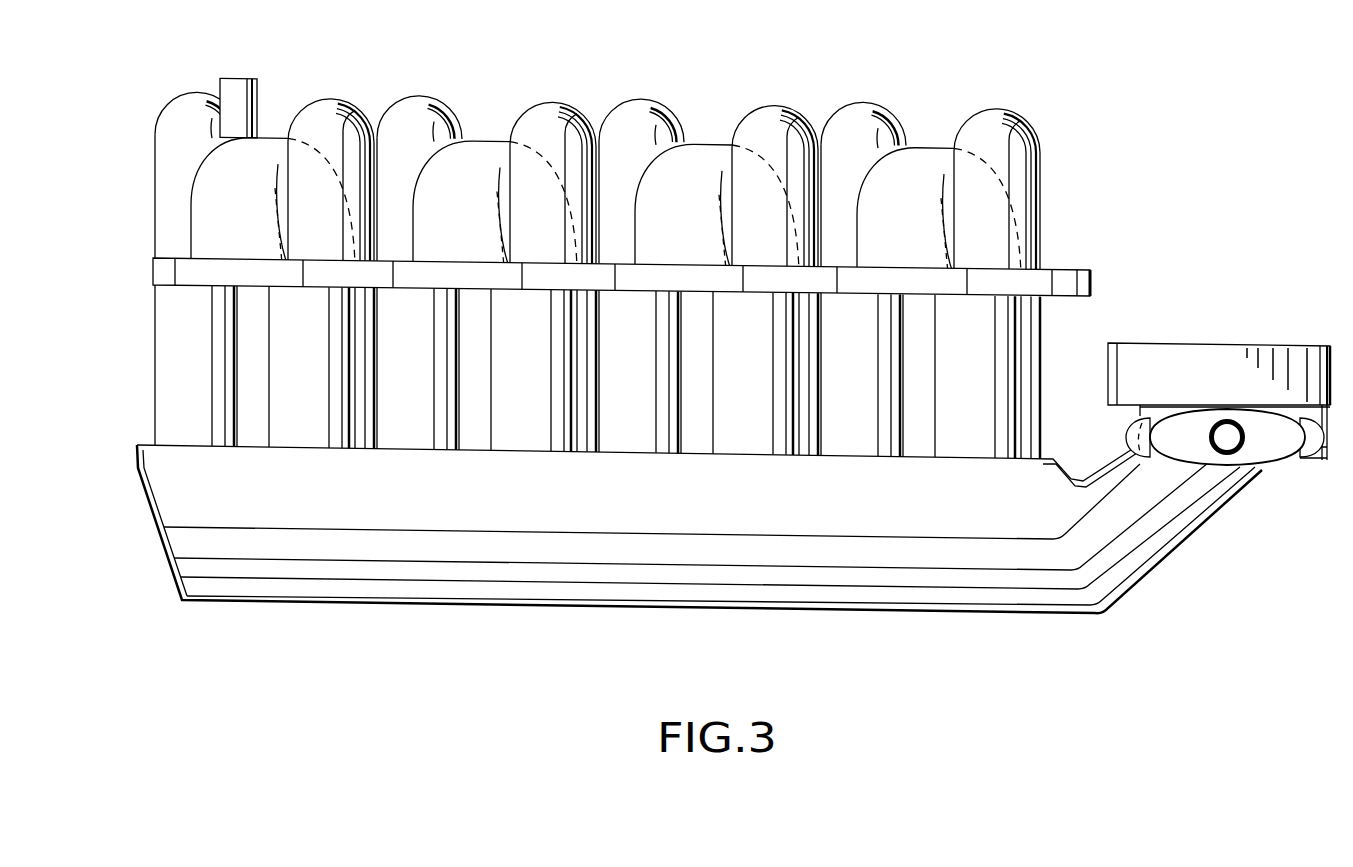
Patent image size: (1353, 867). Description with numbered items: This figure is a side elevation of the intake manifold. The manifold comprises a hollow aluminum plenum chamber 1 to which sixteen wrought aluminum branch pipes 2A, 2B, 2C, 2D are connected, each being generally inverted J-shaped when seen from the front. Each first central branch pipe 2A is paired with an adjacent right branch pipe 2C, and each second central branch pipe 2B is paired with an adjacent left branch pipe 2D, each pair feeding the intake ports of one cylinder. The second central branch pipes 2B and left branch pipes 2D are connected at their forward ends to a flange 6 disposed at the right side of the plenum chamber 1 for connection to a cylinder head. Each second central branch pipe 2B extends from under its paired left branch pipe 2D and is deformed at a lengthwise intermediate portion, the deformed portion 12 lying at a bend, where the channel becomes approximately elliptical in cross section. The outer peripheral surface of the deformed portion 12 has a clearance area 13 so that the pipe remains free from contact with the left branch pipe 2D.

The plenum chamber 1 is at (575, 615).
The first central branch pipe 2A is at (258, 433).
The second central branch pipe 2B is at (270, 142).
The right branch pipe 2C is at (187, 106).
The left branch pipe 2D is at (342, 108).
The flange 6 is at (1068, 278).
The deformed portion 12 is at (252, 222).
The clearance area 13 is at (280, 185).